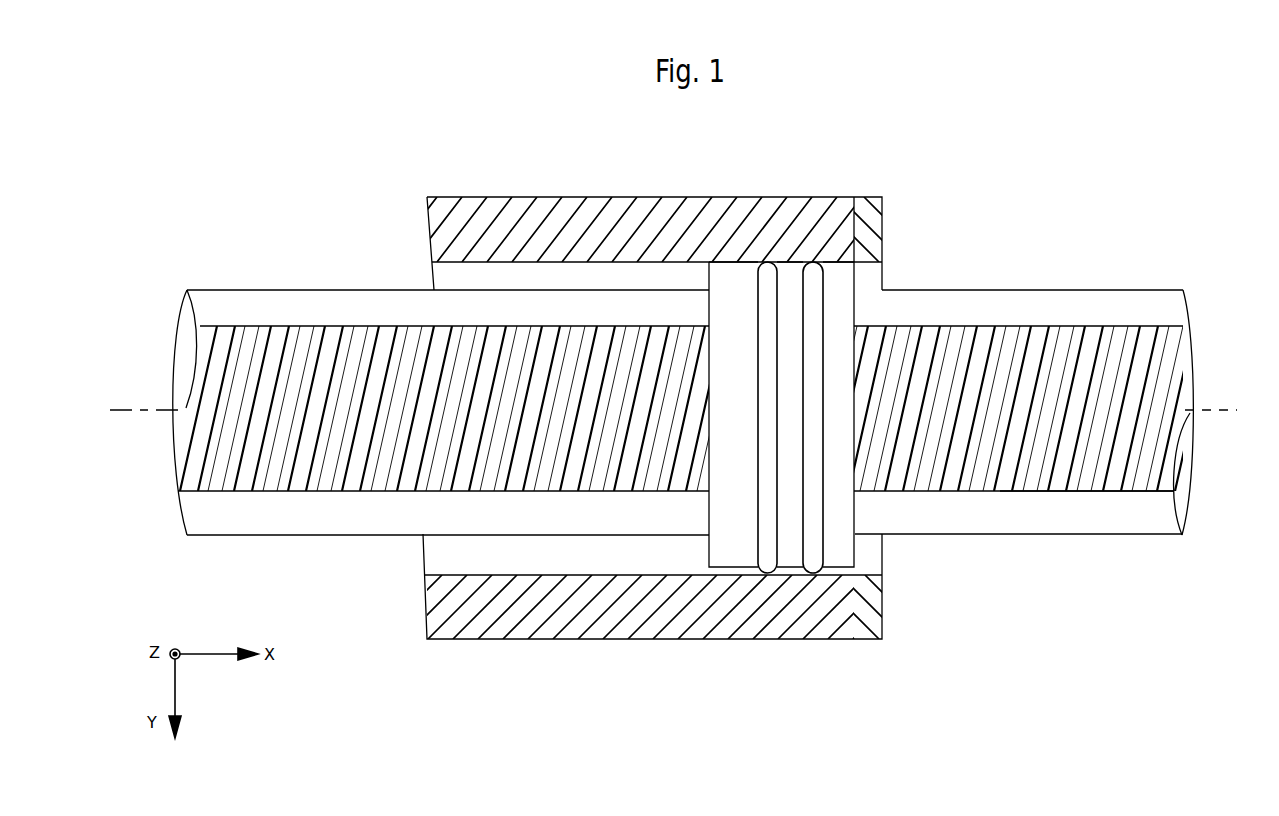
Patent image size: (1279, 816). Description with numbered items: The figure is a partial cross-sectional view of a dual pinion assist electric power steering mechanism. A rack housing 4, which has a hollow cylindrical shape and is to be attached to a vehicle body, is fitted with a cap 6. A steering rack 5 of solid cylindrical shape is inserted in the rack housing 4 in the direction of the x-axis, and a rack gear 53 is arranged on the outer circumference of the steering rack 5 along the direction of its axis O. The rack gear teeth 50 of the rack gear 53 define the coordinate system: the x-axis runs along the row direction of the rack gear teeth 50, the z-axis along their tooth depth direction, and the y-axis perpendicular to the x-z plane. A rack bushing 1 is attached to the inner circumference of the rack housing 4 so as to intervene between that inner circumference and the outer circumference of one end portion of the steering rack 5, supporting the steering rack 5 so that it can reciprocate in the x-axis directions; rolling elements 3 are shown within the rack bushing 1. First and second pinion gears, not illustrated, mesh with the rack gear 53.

The rack bushing 1 is at (856, 545).
The rolling element 3 is at (768, 575).
The rack housing 4 is at (723, 197).
The steering rack 5 is at (1183, 290).
The cap 6 is at (883, 602).
The rack gear teeth 50 is at (397, 326).
The rack gear 53 is at (1066, 505).
The axis O is at (684, 409).